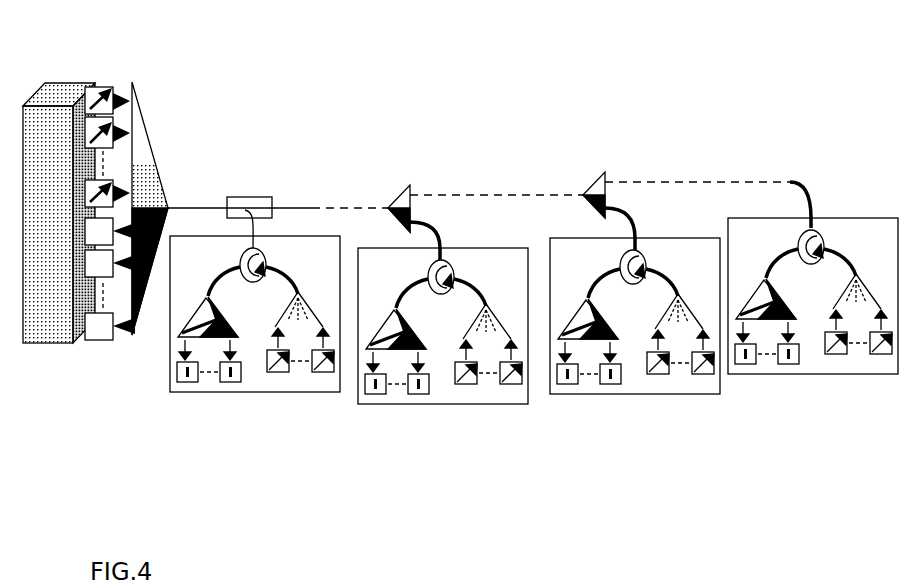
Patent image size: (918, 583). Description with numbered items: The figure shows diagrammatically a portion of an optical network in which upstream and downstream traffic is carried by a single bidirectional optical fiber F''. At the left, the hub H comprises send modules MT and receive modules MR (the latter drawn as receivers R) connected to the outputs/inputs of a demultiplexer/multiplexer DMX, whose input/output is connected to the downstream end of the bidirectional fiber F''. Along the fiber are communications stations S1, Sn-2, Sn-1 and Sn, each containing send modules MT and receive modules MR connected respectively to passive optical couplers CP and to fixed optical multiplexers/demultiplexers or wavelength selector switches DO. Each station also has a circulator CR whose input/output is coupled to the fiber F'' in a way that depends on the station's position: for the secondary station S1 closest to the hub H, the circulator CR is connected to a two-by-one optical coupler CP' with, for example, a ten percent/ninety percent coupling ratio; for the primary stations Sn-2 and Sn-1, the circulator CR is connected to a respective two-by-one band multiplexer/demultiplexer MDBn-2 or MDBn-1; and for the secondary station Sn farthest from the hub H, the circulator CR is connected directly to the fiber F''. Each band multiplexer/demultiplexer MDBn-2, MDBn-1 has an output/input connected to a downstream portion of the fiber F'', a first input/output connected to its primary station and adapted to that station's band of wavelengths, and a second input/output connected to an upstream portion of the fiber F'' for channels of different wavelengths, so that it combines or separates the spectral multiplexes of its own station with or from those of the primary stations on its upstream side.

The hub H is at (58, 82).
The send module MT is at (98, 88).
The receive module MR is at (92, 340).
The receiver R is at (110, 279).
The demultiplexer/multiplexer DMX is at (140, 108).
The 2×1 optical coupler CP' is at (239, 196).
The circulator CR is at (258, 252).
The passive optical coupler CP is at (580, 253).
The wavelength selector switch DO is at (205, 302).
The band multiplexer/demultiplexer MDBn-2 is at (394, 196).
The band multiplexer/demultiplexer MDBn-1 is at (585, 190).
The bidirectional optical fiber F'' is at (733, 147).
The secondary station S1 is at (248, 393).
The primary station Sn-2 is at (450, 405).
The primary station Sn-1 is at (643, 394).
The secondary station Sn is at (822, 374).